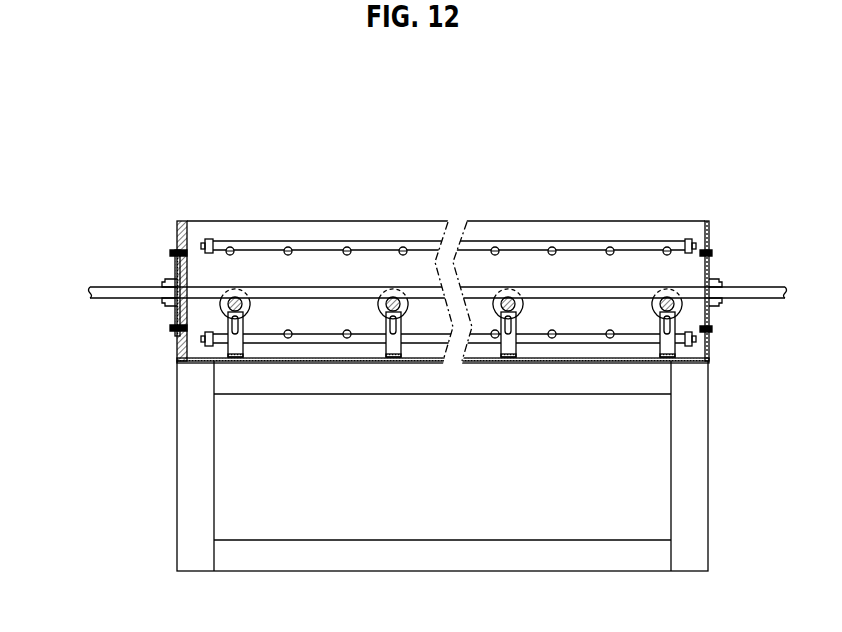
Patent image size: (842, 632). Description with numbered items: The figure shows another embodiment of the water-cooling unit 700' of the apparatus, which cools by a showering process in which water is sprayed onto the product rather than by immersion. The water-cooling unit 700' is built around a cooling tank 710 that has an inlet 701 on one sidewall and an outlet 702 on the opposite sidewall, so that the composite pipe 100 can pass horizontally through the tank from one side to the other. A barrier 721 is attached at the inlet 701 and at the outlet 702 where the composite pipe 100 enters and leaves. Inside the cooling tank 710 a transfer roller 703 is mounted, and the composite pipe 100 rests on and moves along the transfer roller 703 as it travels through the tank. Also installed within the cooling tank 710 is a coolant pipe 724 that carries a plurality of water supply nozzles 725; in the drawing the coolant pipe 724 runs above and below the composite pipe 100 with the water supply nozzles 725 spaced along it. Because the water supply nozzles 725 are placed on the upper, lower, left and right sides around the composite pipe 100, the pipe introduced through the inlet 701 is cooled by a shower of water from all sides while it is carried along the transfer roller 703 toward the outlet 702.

The composite pipe 100 is at (103, 288).
The water-cooling unit 700' is at (442, 266).
The cooling tank 710 is at (687, 221).
The barrier 721 is at (180, 270).
The inlet 701 is at (163, 302).
The outlet 702 is at (712, 297).
The transfer roller 703 is at (248, 308).
The coolant pipe 724 is at (373, 246).
The water supply nozzles 725 is at (345, 247).